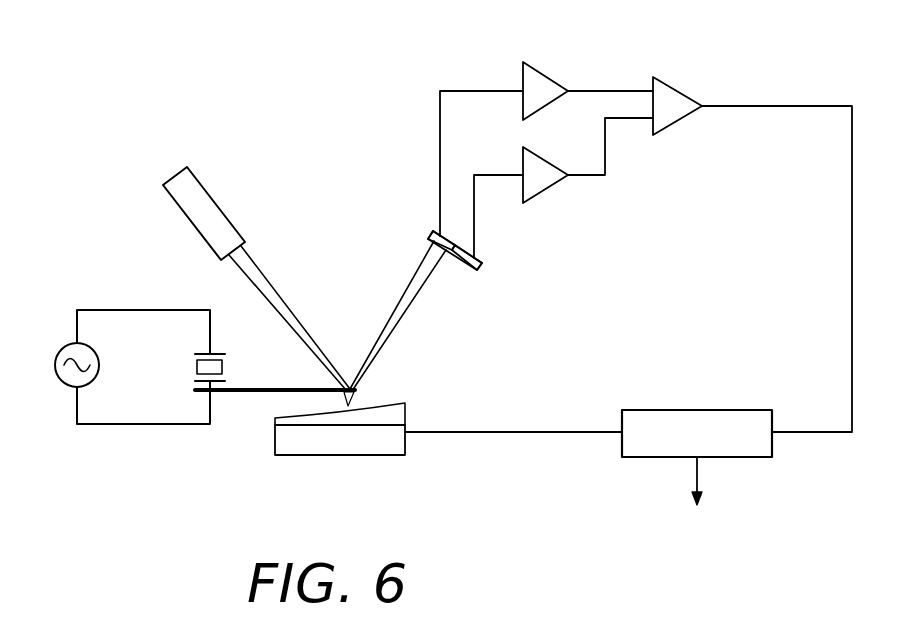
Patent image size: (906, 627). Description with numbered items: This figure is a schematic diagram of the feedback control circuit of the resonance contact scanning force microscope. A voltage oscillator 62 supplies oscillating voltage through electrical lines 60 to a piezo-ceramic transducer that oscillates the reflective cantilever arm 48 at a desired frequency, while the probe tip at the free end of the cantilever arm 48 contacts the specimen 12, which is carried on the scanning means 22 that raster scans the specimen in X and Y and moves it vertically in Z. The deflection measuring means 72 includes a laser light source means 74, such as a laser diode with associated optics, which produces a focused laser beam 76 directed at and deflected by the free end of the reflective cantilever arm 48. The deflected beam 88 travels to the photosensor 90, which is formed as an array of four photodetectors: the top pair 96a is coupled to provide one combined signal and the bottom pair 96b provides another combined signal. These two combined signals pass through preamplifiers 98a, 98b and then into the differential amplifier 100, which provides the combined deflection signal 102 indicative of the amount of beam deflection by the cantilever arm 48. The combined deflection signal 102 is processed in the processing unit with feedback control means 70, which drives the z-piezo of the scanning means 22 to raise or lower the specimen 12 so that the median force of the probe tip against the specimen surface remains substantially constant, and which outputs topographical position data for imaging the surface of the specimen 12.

The light source assembly 72 is at (283, 186).
The laser light source means 74 is at (222, 210).
The focused laser beam 76 is at (268, 281).
The reflective cantilever arm 48 is at (262, 389).
The voltage oscillator 62 is at (62, 381).
The electrical lines 60 is at (172, 424).
The sample 12 is at (395, 411).
The scanning means 22 is at (350, 437).
The deflected beam 88 is at (409, 286).
The top pair of photodetectors 96a is at (434, 236).
The bottom pair of photodetectors 96b is at (472, 269).
The photosensor 90 is at (464, 302).
The preamplifier 98a is at (540, 74).
The preamplifier 98b is at (541, 192).
The differential amplifier 100 is at (680, 119).
The combined deflection signal 102 is at (797, 108).
The processing unit with feedback control means 70 is at (690, 410).